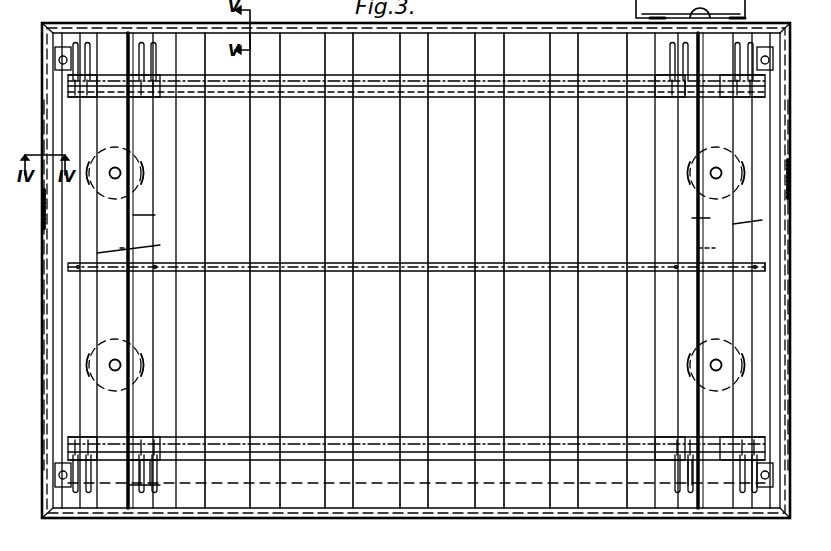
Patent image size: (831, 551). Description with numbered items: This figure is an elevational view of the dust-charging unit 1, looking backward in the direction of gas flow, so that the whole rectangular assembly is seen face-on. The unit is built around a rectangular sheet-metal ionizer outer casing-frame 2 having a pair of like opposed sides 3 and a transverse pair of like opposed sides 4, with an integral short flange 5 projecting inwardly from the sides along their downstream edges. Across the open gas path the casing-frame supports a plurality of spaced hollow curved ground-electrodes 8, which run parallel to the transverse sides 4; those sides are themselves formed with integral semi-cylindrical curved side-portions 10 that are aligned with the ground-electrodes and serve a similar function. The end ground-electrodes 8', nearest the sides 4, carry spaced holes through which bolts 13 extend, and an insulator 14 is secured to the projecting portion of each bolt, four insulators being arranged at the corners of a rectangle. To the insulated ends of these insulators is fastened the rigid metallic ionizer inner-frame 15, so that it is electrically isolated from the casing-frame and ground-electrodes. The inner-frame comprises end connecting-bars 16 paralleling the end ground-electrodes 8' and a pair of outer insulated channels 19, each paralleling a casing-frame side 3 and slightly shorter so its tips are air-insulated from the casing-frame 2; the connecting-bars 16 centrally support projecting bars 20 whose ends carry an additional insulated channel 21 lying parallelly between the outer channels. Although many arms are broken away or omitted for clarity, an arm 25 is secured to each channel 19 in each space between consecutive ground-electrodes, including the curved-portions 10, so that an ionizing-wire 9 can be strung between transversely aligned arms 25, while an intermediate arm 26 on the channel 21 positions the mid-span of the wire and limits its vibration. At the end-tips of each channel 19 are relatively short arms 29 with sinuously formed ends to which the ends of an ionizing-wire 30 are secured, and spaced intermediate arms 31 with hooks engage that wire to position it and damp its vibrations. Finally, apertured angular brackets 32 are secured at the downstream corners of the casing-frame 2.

The dust-charging unit 1 is at (200, 17).
The ionizer outer casing-frame 2 is at (527, 26).
The casing-frame sides 3 is at (490, 26).
The transverse casing-frame sides 4 is at (44, 322).
The flange 5 is at (455, 27).
The ground-electrodes 8 is at (416, 270).
The end ground-electrodes 8' is at (416, 255).
The ionizing-wires 9 is at (76, 130).
The curved side-portions 10 is at (47, 219).
The bolt 13 is at (120, 172).
The insulator 14 is at (142, 172).
The ionizer inner-frame 15 is at (137, 212).
The end connecting-bars 16 is at (98, 255).
The outer insulated channels 19 is at (305, 101).
The projecting bars 20 is at (118, 248).
The insulated channel 21 is at (452, 270).
The arm 25 is at (80, 48).
The intermediate arm 26 is at (766, 264).
The short arms 29 is at (92, 64).
The ionizing-wire 30 is at (143, 488).
The intermediate arms 31 is at (138, 470).
The angular brackets 32 is at (60, 47).